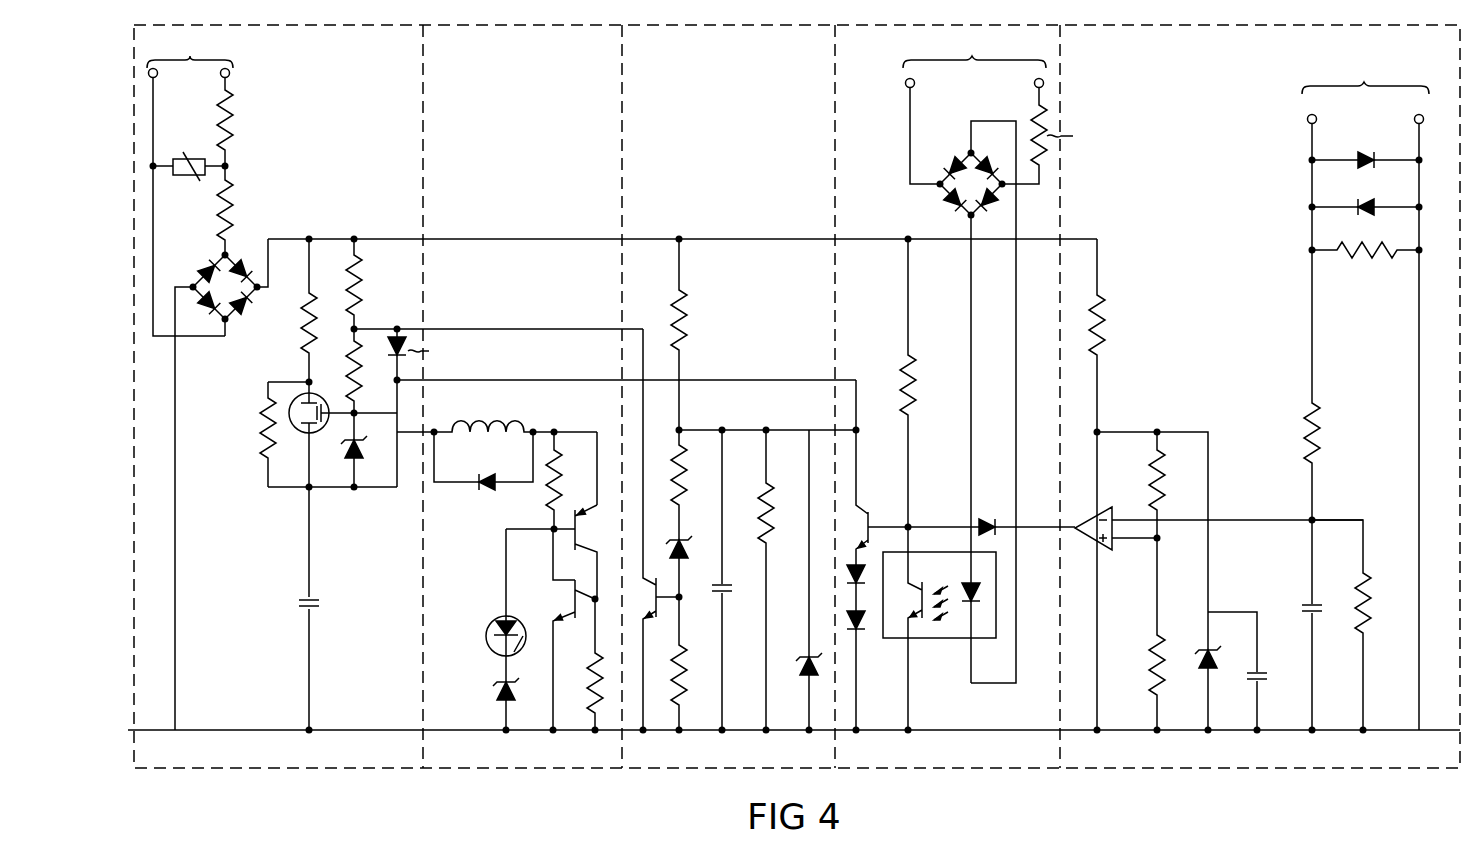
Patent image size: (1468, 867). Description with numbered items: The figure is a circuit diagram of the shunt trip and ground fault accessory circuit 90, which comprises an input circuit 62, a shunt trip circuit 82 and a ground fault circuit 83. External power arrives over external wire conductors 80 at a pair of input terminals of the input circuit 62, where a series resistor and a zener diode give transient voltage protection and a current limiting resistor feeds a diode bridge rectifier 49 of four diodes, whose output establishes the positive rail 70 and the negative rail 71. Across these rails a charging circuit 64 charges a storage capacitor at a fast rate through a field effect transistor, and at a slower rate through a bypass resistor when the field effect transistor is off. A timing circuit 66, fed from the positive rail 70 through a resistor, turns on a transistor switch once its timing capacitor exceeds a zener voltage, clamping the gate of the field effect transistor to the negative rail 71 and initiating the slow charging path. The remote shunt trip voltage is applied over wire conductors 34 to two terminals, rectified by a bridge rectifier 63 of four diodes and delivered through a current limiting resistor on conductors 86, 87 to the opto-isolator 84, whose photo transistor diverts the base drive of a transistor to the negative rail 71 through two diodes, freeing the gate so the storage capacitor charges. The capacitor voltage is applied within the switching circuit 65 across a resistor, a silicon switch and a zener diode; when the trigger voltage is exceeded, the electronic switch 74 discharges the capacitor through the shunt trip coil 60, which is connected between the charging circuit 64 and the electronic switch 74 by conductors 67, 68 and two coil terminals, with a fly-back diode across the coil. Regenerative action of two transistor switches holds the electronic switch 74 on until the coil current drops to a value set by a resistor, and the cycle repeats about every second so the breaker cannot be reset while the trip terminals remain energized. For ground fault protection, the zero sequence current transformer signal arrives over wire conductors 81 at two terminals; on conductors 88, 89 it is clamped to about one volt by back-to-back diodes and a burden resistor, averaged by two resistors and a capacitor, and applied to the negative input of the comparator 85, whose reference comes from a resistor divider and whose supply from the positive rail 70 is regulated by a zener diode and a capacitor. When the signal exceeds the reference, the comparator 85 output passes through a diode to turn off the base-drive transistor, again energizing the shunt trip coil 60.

The wire conductors 34 is at (980, 49).
The diode bridge rectifier 49 is at (231, 295).
The shunt trip coil 60 is at (489, 417).
The input circuit 62 is at (235, 693).
The bridge rectifier 63 is at (978, 193).
The charging circuit 64 is at (370, 671).
The switching circuit 65 is at (550, 363).
The timing circuit 66 is at (785, 365).
The conductor 67 is at (556, 428).
The conductor 68 is at (382, 490).
The positive rail 70 is at (513, 239).
The negative rail 71 is at (455, 732).
The electronic switch 74 is at (582, 405).
The external wire conductors 80 is at (202, 50).
The wire conductors 81 is at (1375, 63).
The shunt trip circuit 82 is at (886, 449).
The ground fault circuit 83 is at (1206, 367).
The opto-isolator 84 is at (893, 640).
The comparator 85 is at (1103, 552).
The conductor 86 is at (968, 228).
The conductor 87 is at (1018, 228).
The conductor 88 is at (1314, 338).
The conductor 89 is at (1421, 362).
The accessory circuit 90 is at (1312, 805).